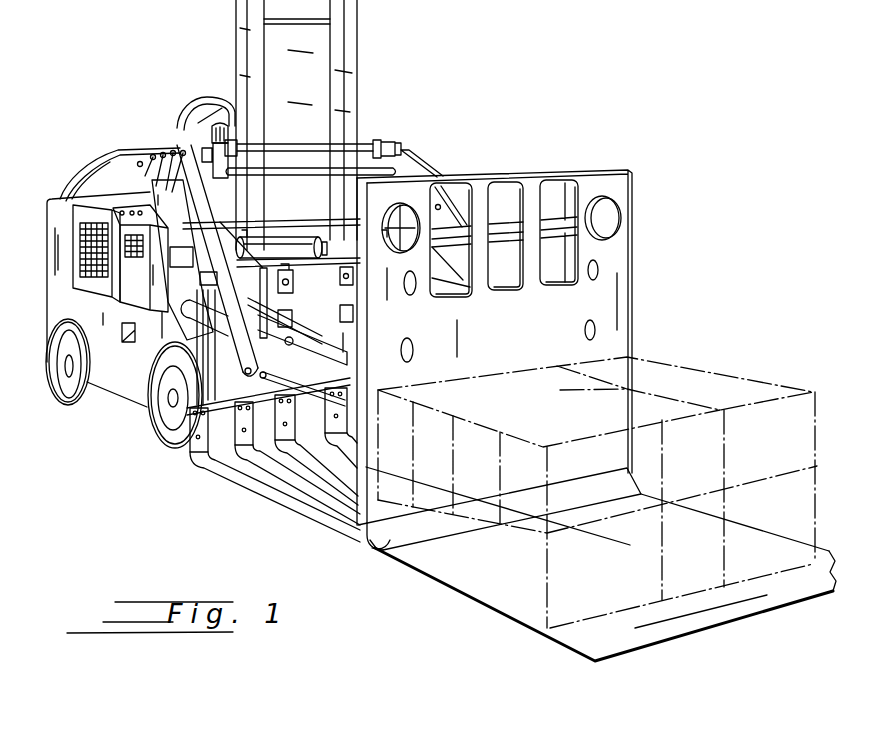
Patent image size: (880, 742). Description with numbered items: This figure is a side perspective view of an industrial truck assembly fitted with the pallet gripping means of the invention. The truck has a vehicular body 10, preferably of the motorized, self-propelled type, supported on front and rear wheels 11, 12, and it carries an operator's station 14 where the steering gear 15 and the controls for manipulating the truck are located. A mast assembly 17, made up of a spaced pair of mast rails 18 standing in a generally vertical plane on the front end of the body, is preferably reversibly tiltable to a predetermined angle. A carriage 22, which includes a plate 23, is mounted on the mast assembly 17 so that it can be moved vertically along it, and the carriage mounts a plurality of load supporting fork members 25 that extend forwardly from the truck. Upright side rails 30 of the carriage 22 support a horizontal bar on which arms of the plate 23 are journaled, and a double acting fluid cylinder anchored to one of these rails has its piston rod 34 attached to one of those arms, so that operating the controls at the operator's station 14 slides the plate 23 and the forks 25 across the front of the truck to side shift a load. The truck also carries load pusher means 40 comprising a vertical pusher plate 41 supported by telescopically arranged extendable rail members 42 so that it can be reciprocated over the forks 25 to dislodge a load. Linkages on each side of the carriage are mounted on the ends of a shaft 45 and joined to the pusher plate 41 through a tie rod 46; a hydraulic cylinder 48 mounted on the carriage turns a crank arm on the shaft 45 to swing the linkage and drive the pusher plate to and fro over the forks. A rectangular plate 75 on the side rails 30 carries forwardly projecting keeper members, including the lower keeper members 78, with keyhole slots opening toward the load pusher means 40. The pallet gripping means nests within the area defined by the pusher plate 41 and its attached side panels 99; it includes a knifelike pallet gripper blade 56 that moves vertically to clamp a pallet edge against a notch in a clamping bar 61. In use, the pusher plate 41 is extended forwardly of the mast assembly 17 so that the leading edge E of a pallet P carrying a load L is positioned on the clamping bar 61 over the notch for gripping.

The vehicular body 10 is at (157, 293).
The front wheels 11 is at (163, 448).
The rear wheels 12 is at (80, 404).
The operator's station 14 is at (163, 139).
The steering gear 15 is at (211, 98).
The mast assembly 17 is at (362, 80).
The mast rails 18 is at (237, 21).
The carriage 22 is at (305, 217).
The plate 23 is at (302, 360).
The load supporting fork members 25 is at (270, 487).
The upright side rails 30 is at (400, 142).
The piston rod 34 is at (441, 167).
The load pusher means 40 is at (637, 218).
The pusher plate 41 is at (501, 271).
The extendable rail members 42 is at (310, 336).
The shaft 45 is at (311, 146).
The tie rod 46 is at (318, 390).
The hydraulic cylinder 48 is at (217, 263).
The pallet gripper blade 56 is at (381, 553).
The clamping bar 61 is at (352, 534).
The rectangular plate 75 is at (306, 278).
The lower keeper members 78 is at (343, 286).
The side panels 99 is at (369, 322).
The leading edge E is at (366, 545).
The load L is at (697, 372).
The pallet P is at (440, 590).